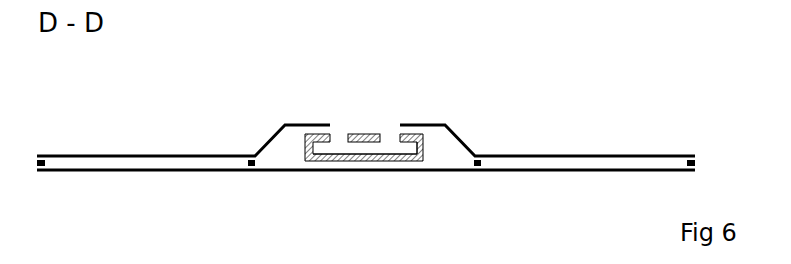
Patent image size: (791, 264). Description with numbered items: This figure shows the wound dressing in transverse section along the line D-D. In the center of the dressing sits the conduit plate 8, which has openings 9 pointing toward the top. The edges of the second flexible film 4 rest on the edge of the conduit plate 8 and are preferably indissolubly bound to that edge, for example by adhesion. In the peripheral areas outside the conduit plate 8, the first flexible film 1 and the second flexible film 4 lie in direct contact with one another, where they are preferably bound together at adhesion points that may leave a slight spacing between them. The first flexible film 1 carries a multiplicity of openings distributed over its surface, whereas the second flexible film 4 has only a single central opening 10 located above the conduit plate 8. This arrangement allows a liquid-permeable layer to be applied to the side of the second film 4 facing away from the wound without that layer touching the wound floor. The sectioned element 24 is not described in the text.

The first flexible film 1 is at (518, 171).
The second flexible film 4 is at (612, 155).
The conduit plate 8 is at (378, 158).
The openings 9 is at (393, 131).
The central opening 10 is at (365, 125).
The frame element 24 is at (335, 145).